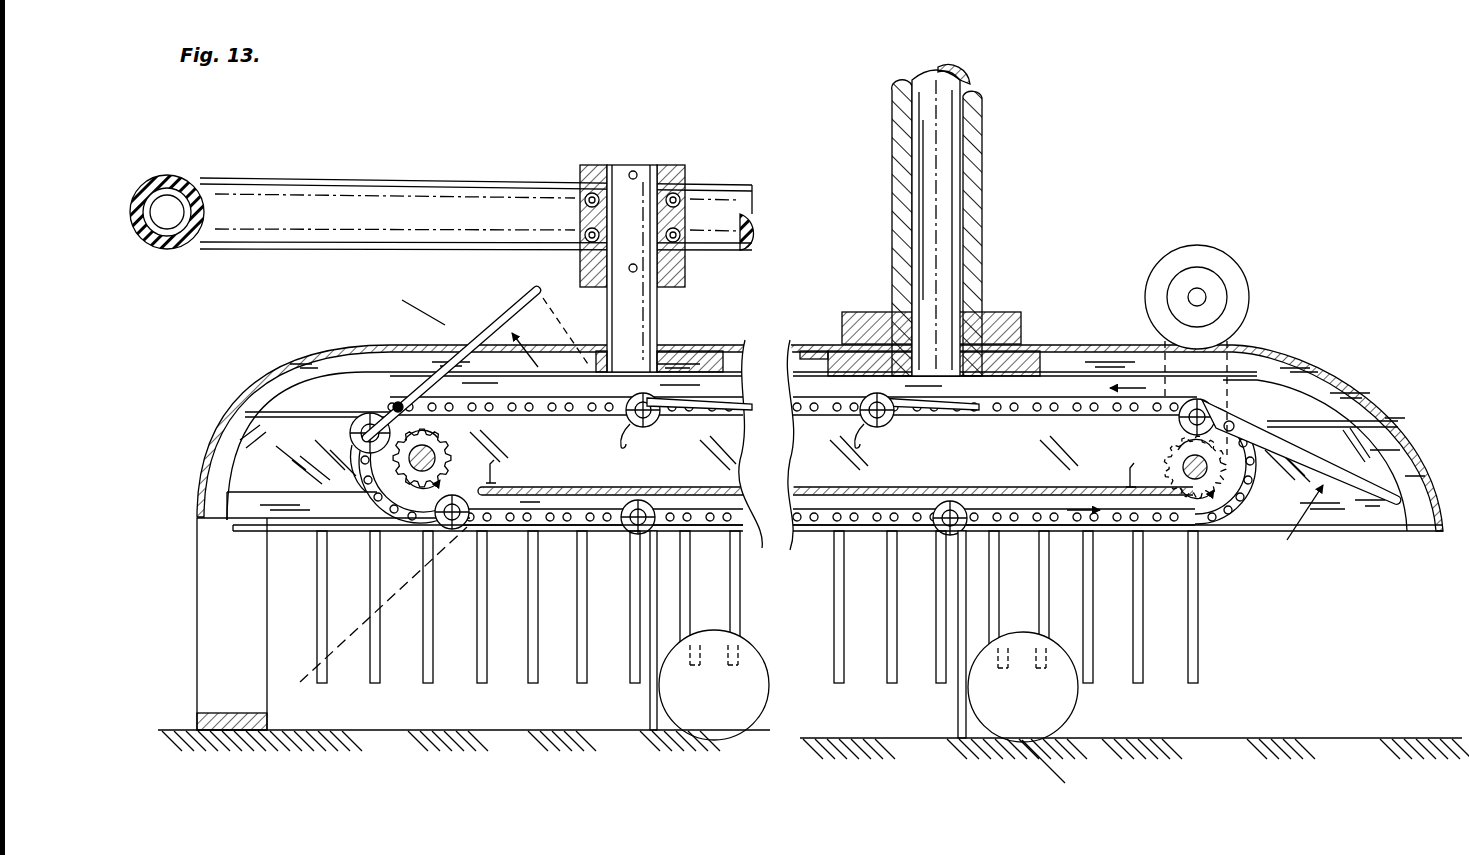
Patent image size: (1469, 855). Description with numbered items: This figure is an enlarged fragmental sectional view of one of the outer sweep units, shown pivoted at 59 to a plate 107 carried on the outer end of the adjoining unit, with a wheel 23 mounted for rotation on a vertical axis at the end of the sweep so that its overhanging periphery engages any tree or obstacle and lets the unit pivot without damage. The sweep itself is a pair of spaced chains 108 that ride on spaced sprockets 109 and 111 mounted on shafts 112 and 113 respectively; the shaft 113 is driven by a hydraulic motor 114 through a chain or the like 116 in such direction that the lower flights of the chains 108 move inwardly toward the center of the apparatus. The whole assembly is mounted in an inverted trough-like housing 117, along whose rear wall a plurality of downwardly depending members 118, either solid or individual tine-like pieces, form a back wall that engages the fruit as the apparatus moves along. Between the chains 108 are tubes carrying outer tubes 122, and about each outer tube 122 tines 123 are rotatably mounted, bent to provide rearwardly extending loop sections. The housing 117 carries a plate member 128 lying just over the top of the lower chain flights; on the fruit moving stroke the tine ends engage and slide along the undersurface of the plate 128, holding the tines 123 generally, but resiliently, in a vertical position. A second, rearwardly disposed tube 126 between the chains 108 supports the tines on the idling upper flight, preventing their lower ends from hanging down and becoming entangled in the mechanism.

The wheel 23 is at (404, 178).
The pivot 59 is at (942, 258).
The plate 107 is at (1018, 322).
The chain 108 is at (742, 519).
The sprocket 109 is at (452, 452).
The sprocket 111 is at (1160, 451).
The shaft 112 is at (408, 459).
The shaft 113 is at (1184, 464).
The hydraulic motor 114 is at (1238, 300).
The chain 116 is at (1240, 352).
The housing 117 is at (795, 345).
The downwardly depending member 118 is at (477, 664).
The outer tube 122 is at (633, 428).
The tine 123 is at (650, 713).
The rearwardly disposed tube 126 is at (399, 404).
The plate member 128 is at (958, 488).